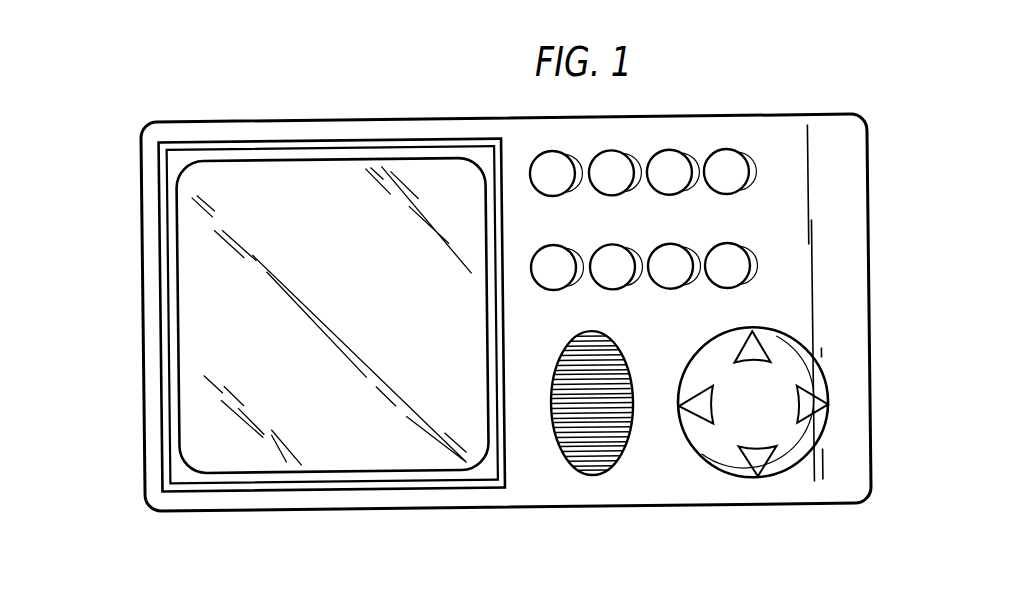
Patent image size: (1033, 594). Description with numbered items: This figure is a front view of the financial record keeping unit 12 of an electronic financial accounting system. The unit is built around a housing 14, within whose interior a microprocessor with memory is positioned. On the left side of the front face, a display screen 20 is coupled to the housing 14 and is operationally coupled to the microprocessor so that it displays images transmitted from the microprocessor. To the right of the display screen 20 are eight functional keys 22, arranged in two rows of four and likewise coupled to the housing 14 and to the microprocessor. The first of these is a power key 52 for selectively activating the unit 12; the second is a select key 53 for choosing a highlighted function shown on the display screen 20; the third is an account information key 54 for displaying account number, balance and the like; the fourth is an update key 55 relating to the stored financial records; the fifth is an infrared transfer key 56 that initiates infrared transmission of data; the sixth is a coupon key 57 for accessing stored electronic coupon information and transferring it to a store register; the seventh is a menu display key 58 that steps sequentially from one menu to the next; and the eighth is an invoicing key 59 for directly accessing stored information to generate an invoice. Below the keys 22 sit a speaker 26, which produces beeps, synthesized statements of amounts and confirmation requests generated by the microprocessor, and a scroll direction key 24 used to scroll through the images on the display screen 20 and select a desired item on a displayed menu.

The financial record keeping unit 12 is at (126, 299).
The housing 14 is at (800, 126).
The display screen 20 is at (228, 447).
The functional keys 22 is at (778, 269).
The scroll direction key 24 is at (785, 435).
The speaker 26 is at (592, 455).
The power key 52 is at (550, 156).
The select key 53 is at (607, 155).
The account information key 54 is at (672, 160).
The update key 55 is at (731, 160).
The infrared transfer key 56 is at (563, 246).
The coupon key 57 is at (622, 246).
The menu display key 58 is at (678, 250).
The invoicing key 59 is at (735, 250).